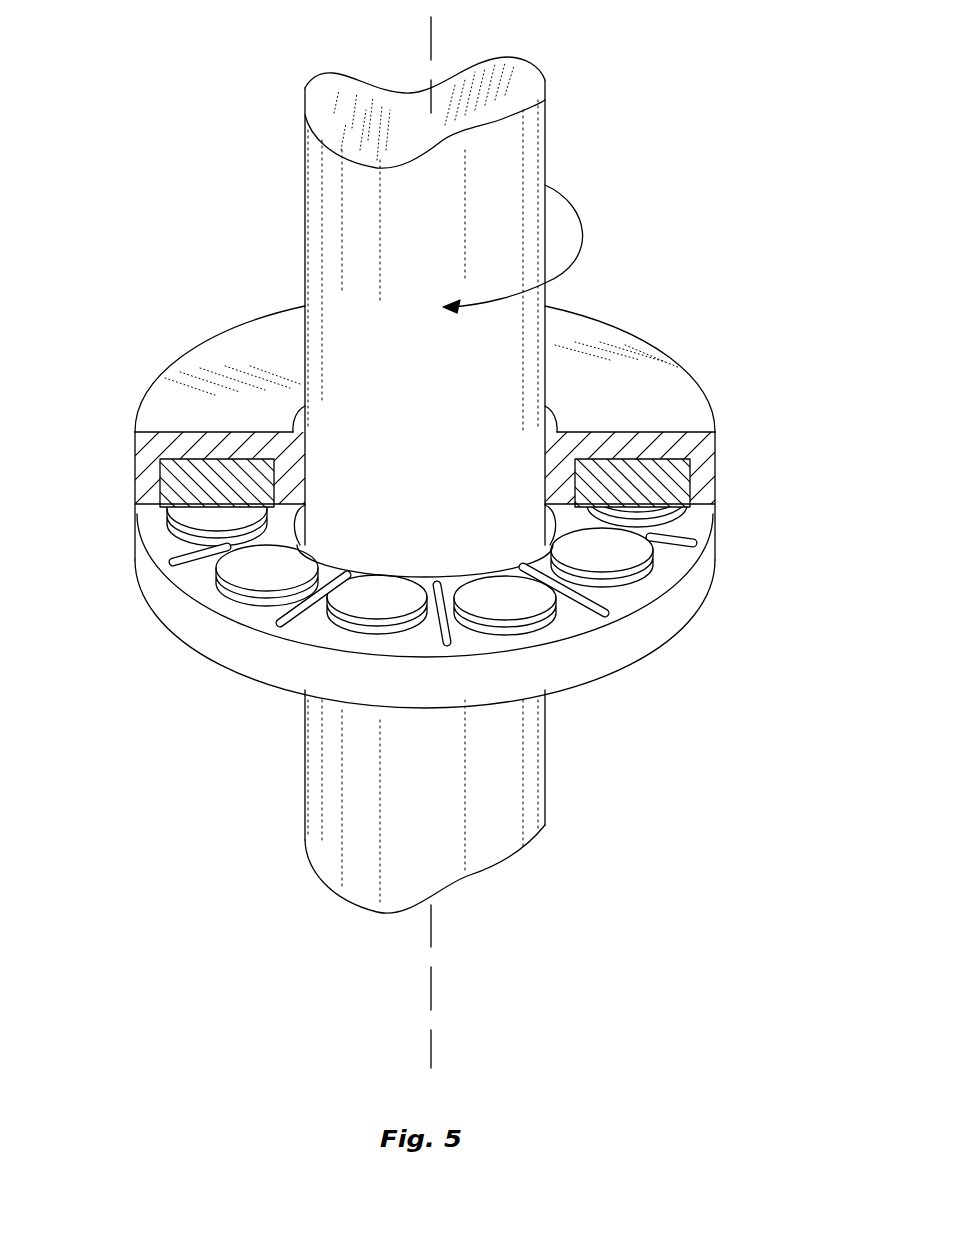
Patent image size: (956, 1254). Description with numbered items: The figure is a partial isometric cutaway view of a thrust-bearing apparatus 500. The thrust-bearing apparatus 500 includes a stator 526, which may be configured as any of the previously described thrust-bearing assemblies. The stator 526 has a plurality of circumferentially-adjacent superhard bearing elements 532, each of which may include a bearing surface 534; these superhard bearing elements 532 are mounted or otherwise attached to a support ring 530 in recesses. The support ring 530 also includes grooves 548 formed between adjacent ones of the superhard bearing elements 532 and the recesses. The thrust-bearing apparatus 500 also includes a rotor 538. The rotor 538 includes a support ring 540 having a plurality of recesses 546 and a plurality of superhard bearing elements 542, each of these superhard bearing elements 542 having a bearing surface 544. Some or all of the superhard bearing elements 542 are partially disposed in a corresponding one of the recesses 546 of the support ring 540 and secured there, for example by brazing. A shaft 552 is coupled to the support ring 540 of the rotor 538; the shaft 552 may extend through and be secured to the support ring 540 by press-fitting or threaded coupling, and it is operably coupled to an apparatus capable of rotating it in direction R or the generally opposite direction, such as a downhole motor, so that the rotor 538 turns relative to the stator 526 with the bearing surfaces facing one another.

The thrust-bearing apparatus 500 is at (183, 160).
The shaft 552 is at (533, 150).
The stator 526 is at (717, 572).
The rotor 538 is at (625, 329).
The support ring 540 is at (697, 410).
The superhard bearing elements 542 is at (716, 433).
The recesses 546 is at (632, 458).
The bearing surface 544 is at (700, 515).
The support ring 530 is at (665, 623).
The superhard bearing elements 532 is at (640, 578).
The bearing surface 534 is at (637, 557).
The grooves 548 is at (605, 613).